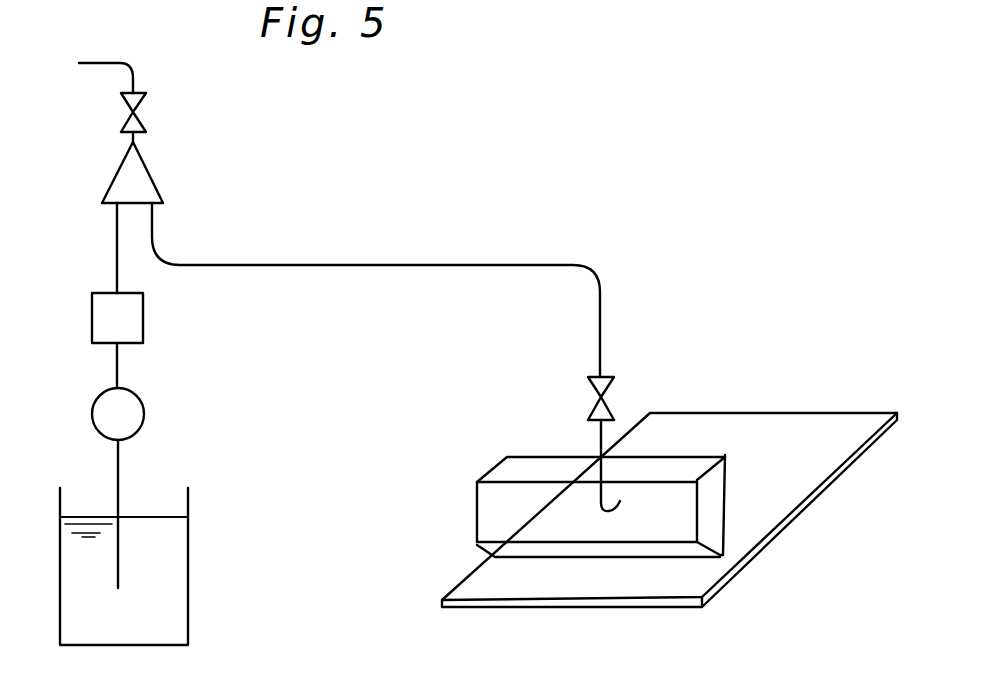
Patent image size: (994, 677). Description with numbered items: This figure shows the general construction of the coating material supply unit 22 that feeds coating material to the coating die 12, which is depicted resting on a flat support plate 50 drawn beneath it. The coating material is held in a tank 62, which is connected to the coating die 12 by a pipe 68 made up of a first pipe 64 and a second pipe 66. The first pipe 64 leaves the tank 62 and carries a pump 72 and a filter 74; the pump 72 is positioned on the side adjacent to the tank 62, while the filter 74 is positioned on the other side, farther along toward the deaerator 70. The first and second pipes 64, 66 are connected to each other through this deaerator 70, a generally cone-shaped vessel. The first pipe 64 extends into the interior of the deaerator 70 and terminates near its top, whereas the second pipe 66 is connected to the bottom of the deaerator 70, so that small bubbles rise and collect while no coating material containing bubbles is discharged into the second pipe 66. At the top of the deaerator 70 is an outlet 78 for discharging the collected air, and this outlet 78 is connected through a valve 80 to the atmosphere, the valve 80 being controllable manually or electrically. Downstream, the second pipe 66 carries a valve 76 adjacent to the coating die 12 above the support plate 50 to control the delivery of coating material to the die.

The coating material supply unit 22 is at (558, 102).
The valve 80 is at (143, 95).
The outlet 78 is at (135, 137).
The deaerator 70 is at (155, 175).
The filter 74 is at (143, 324).
The pump 72 is at (145, 410).
The first pipe 64 is at (123, 485).
The tank 62 is at (188, 585).
The second pipe 66 is at (383, 265).
The pipe 68 is at (280, 262).
The valve 76 is at (588, 387).
The coating die 12 is at (475, 515).
The support plate 50 is at (757, 412).